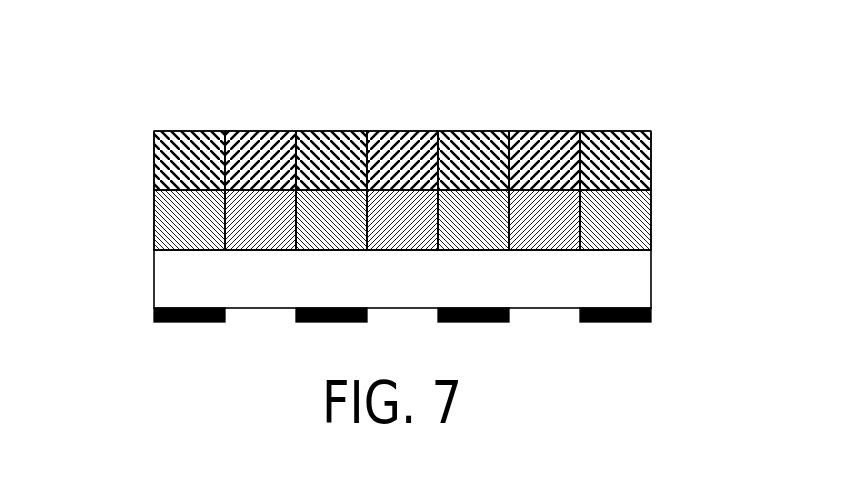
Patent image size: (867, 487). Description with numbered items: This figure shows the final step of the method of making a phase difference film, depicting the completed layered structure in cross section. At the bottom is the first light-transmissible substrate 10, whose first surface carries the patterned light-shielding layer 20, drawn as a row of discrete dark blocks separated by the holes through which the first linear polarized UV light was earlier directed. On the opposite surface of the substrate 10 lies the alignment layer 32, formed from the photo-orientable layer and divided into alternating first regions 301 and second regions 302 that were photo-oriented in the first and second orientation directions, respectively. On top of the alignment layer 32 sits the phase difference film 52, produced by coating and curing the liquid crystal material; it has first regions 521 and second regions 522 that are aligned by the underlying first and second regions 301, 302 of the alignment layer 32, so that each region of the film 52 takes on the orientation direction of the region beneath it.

The first light-transmissible substrate 10 is at (154, 279).
The patterned light-shielding layer 20 is at (610, 322).
The alignment layer 32 is at (422, 214).
The first regions 301 is at (560, 218).
The second regions 302 is at (642, 211).
The phase difference film 52 is at (366, 103).
The first regions of phase difference film 521 is at (262, 131).
The second regions of phase difference film 522 is at (190, 131).